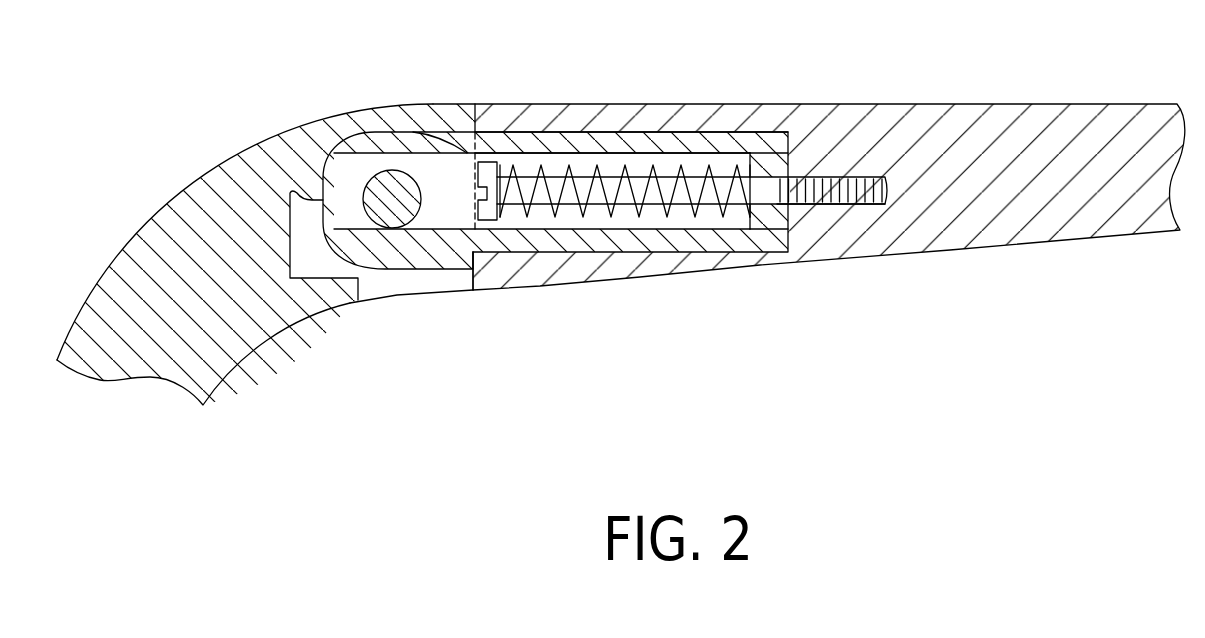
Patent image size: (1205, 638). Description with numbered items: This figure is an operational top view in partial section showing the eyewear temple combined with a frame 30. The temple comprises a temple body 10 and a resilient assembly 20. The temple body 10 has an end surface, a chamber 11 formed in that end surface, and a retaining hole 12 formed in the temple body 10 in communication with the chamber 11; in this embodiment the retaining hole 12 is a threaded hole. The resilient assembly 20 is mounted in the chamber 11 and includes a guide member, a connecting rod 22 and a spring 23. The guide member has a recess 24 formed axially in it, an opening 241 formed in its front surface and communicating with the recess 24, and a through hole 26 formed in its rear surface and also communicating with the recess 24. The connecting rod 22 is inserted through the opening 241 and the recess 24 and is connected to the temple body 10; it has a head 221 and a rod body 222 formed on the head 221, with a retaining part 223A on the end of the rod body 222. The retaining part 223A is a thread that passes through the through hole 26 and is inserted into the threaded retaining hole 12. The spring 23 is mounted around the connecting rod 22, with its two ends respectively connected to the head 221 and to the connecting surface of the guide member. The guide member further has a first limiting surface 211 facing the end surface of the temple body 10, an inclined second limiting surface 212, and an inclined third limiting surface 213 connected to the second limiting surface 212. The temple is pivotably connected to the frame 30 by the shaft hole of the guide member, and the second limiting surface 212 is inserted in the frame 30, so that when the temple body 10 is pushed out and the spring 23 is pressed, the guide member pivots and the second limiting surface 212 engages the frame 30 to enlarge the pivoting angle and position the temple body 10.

The temple body 10 is at (995, 133).
The chamber 11 is at (560, 143).
The retaining hole 12 is at (846, 187).
The resilient assembly 20 is at (399, 275).
The first limiting surface 211 is at (476, 258).
The second limiting surface 212 is at (450, 140).
The third limiting surface 213 is at (503, 144).
The connecting rod 22 is at (641, 160).
The head 221 is at (493, 217).
The rod body 222 is at (673, 193).
The retaining part 223A is at (827, 198).
The spring 23 is at (713, 193).
The recess 24 is at (598, 215).
The opening 241 is at (291, 190).
The through hole 26 is at (767, 198).
The frame 30 is at (330, 127).